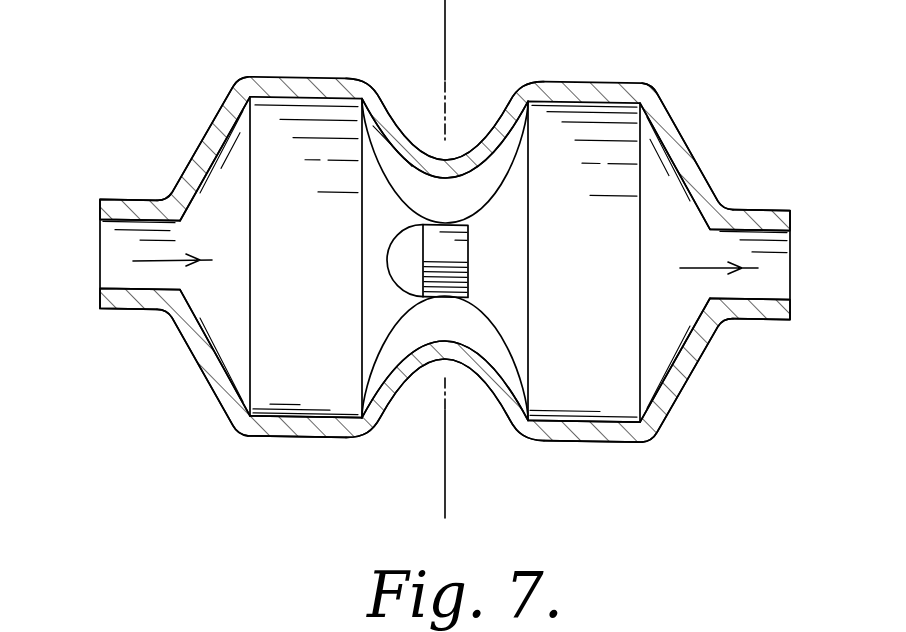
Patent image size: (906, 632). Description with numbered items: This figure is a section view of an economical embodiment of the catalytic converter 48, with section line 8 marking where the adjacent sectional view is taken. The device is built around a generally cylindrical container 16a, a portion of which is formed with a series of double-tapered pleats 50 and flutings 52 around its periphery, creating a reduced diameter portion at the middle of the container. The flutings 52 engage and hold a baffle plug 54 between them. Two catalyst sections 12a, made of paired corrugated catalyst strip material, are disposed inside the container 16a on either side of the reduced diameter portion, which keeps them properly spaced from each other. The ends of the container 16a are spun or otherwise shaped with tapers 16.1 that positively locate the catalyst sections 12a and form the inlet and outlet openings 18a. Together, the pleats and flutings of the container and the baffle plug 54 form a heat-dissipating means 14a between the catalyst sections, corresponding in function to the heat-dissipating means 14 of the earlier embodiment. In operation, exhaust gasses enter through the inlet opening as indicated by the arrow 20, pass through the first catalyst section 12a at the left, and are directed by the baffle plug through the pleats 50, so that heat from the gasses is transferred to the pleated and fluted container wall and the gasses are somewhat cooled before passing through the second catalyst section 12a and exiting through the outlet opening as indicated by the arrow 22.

The catalytic converter 48 is at (712, 120).
The double-tapered pleats 50 is at (487, 157).
The flutings 52 is at (405, 170).
The baffle plug 54 is at (460, 254).
The heat-dissipating means 14 is at (518, 522).
The heat-dissipating means 14a is at (465, 392).
The catalyst sections 12a is at (267, 217).
The tapers 16.1 is at (213, 143).
The container 16a is at (297, 437).
The inlet and outlet openings 18a is at (110, 246).
The arrow 20 is at (165, 263).
The arrow 22 is at (700, 268).
The section line 8- 8 is at (480, 23).